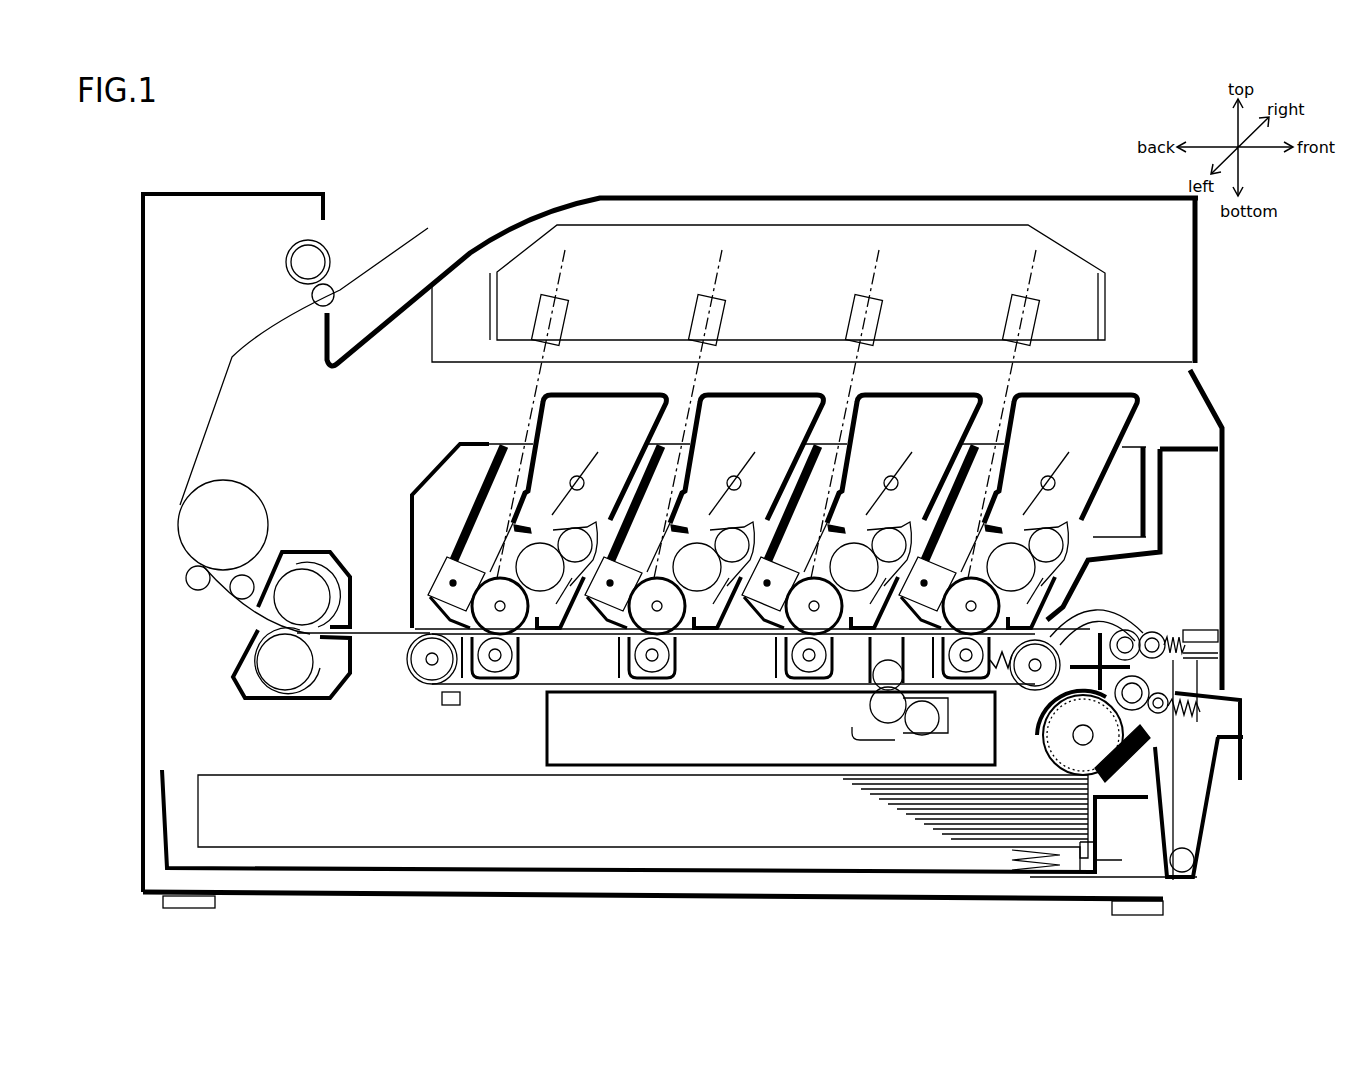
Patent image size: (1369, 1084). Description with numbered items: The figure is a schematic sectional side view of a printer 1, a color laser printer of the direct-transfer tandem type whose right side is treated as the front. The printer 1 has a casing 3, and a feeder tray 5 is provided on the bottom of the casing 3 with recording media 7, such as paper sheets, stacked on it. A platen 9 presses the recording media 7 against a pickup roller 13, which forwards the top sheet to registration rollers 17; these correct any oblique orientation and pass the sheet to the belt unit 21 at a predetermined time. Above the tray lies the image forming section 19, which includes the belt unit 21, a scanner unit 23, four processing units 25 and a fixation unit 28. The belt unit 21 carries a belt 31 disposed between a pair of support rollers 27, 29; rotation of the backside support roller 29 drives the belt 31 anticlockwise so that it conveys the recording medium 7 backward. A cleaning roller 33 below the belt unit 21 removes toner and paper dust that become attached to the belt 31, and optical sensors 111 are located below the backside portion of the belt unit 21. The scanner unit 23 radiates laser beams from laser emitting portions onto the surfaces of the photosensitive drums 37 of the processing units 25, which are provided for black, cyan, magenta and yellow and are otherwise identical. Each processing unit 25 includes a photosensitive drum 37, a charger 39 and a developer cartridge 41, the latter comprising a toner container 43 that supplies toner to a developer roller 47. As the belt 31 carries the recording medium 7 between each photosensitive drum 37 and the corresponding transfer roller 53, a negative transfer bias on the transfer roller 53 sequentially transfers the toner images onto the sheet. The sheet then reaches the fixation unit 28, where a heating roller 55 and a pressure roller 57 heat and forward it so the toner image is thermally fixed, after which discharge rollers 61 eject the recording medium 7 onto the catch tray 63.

The printer 1 is at (1019, 180).
The casing 3 is at (250, 193).
The feeder tray 5 is at (413, 870).
The recording media 7 is at (396, 244).
The platen 9 is at (760, 848).
The pickup roller 13 is at (1063, 772).
The registration rollers 17 is at (1150, 656).
The image forming section 19 is at (412, 451).
The belt unit 21 is at (490, 708).
The scanner unit 23 is at (807, 240).
The processing units 25 is at (713, 285).
The support roller 27 is at (1037, 678).
The fixation unit 28 is at (240, 695).
The backside support roller 29 is at (433, 675).
The belt 31 is at (513, 686).
The cleaning roller 33 is at (880, 706).
The photosensitive drum 37 is at (782, 576).
The charger 39 is at (592, 600).
The developer cartridge 41 is at (733, 600).
The toner container 43 is at (755, 397).
The developer roller 47 is at (698, 593).
The transfer roller 53 is at (967, 668).
The heating roller 55 is at (285, 608).
The pressure roller 57 is at (272, 653).
The discharge rollers 61 is at (327, 297).
The catch tray 63 is at (472, 250).
The optical sensors 111 is at (451, 708).